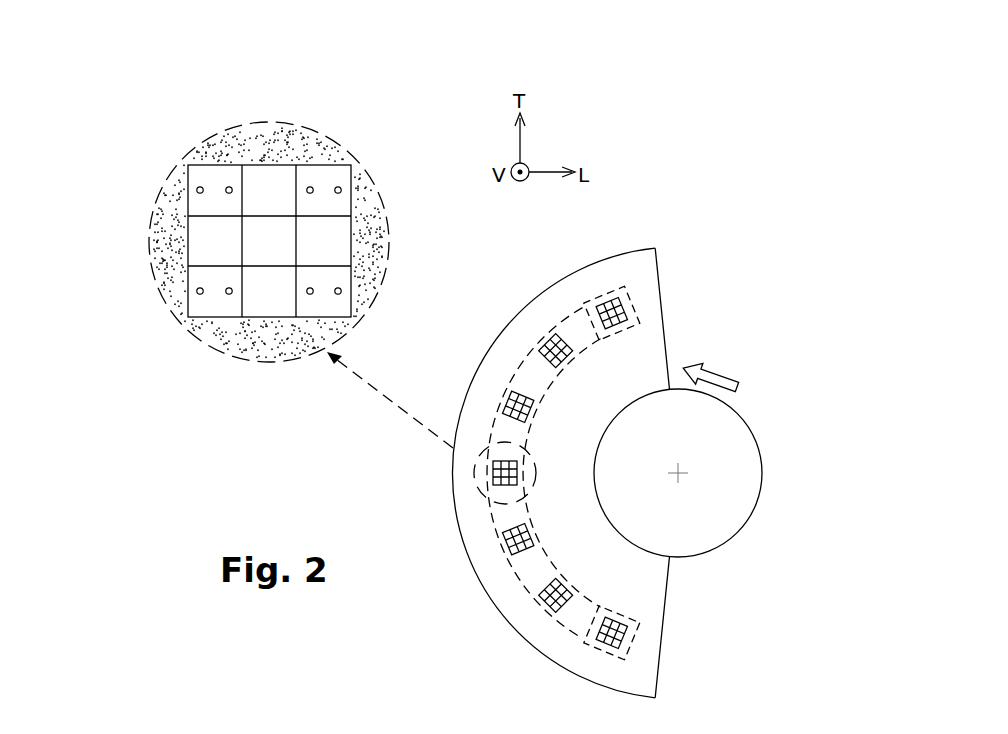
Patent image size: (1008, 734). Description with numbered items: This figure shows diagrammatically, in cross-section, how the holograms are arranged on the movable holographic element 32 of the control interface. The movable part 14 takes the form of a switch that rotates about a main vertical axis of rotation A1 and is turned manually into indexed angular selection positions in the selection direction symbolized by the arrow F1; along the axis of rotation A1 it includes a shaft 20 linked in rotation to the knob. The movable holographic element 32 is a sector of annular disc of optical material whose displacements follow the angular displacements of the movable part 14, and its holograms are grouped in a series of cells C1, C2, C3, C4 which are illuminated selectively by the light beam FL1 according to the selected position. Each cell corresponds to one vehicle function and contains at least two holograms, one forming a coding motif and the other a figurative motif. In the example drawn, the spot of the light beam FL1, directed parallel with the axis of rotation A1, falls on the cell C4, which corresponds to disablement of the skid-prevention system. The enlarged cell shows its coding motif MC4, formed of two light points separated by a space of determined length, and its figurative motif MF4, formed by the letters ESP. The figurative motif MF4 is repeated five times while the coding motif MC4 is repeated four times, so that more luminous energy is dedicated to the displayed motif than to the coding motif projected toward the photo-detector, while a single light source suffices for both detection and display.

The movable holographic element 32 is at (643, 244).
The shaft 20 is at (732, 538).
The movable part 14 is at (708, 582).
The main vertical axis of rotation A1 is at (685, 470).
The selection direction arrow F1 is at (714, 370).
The first cell C1 is at (604, 302).
The second cell C2 is at (550, 343).
The third cell C3 is at (507, 402).
The fourth cell C4 is at (493, 478).
The light beam FL1 is at (487, 527).
The coding motif MC4 is at (218, 176).
The figurative motif MF4 is at (280, 174).